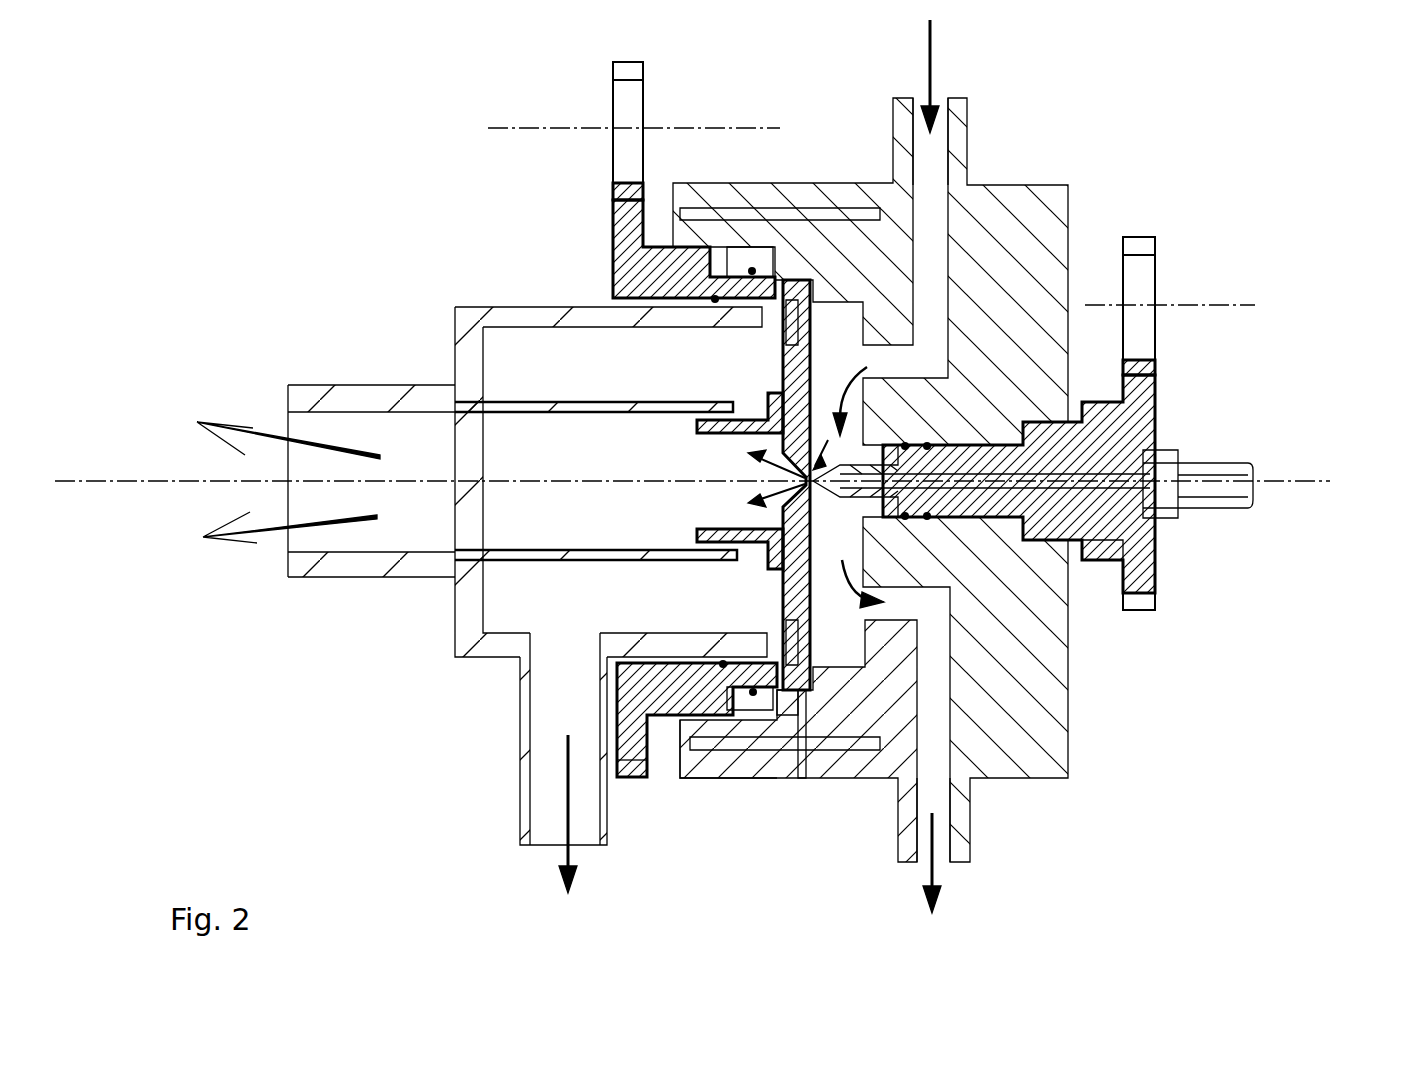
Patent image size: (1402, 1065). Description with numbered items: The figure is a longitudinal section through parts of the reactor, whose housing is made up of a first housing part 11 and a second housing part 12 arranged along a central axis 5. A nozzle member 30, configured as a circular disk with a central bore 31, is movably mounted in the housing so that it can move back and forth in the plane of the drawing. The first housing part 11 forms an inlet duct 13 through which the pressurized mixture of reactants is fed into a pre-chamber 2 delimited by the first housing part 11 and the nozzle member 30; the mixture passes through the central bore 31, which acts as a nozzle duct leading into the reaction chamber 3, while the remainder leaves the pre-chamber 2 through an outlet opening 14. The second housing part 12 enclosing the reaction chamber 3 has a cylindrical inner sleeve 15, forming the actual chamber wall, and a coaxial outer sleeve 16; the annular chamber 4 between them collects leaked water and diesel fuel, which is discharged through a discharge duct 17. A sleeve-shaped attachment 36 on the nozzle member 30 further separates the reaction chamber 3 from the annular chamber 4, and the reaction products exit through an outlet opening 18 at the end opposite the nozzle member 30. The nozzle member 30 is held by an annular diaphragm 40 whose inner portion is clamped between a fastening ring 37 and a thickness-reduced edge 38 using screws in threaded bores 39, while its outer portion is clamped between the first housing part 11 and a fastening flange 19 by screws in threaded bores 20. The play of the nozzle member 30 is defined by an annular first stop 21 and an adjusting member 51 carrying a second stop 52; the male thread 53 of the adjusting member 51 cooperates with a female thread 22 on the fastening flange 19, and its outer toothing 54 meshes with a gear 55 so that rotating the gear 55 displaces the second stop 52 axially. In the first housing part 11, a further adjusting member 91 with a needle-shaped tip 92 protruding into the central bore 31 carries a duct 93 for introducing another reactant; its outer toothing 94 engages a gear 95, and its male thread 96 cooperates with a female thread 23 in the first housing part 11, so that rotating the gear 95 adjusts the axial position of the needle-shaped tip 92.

The pre-chamber 2 is at (845, 348).
The reaction chamber 3 is at (553, 457).
The annular chamber 4 is at (648, 380).
The central axis 5 is at (1378, 488).
The first housing part 11 is at (1053, 778).
The second housing part 12 is at (457, 627).
The inlet duct 13 is at (945, 155).
The outlet opening 14 is at (937, 800).
The inner sleeve 15 is at (512, 408).
The outer sleeve 16 is at (516, 307).
The discharge duct 17 is at (540, 808).
The outlet opening 18 is at (290, 545).
The fastening flange 19 is at (722, 768).
The threaded bores 20 is at (705, 745).
The first stop 21 is at (810, 290).
The female thread 22 is at (665, 663).
The female thread 23 is at (1047, 540).
The nozzle member 30 is at (783, 603).
The central bore 31 is at (800, 480).
The sleeve-shaped attachment 36 is at (750, 420).
The fastening ring 37 is at (795, 715).
The edge 38 is at (815, 665).
The threaded bores 39 is at (808, 655).
The diaphragm 40 is at (805, 768).
The adjusting member 51 is at (613, 227).
The second stop 52 is at (760, 268).
The male thread 53 is at (657, 250).
The outer toothing 54 is at (613, 192).
The gear 55 is at (613, 104).
The further adjusting member 91 is at (1100, 520).
The needle-shaped tip 92 is at (828, 493).
The duct 93 is at (1155, 445).
The outer toothing 94 is at (1150, 610).
The gear 95 is at (1150, 287).
The male thread 96 is at (1060, 425).